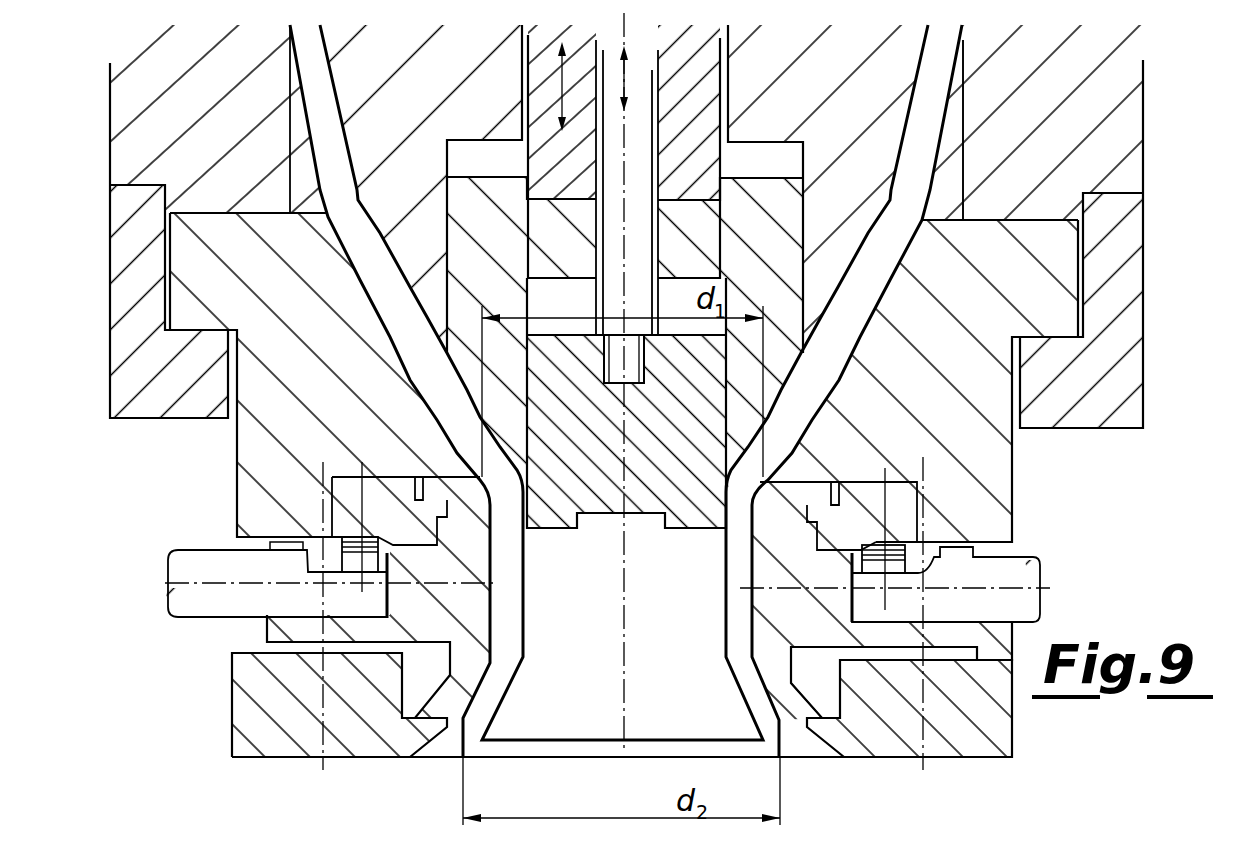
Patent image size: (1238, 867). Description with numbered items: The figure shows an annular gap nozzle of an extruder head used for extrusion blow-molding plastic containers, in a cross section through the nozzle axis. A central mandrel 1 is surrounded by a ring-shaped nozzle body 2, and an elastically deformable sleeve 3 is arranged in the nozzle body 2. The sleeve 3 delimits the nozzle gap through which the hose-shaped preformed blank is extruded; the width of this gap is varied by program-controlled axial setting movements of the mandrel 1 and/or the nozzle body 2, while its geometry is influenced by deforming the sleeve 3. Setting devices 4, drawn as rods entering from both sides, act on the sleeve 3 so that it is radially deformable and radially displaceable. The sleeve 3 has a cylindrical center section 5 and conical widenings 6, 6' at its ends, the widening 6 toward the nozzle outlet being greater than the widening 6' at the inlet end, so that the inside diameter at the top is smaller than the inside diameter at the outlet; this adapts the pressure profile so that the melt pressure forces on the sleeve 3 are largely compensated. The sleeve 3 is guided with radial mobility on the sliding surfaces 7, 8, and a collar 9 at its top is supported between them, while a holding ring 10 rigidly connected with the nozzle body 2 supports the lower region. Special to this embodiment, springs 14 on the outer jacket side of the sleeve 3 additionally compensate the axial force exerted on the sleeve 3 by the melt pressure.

The mandrel 1 is at (578, 722).
The nozzle body 2 is at (282, 444).
The sleeve 3 is at (768, 649).
The setting devices 4 is at (1013, 580).
The cylindrical center section 5 is at (770, 540).
The conical widening 6 is at (861, 740).
The conical widening 6' is at (984, 489).
The sliding surface 7 is at (775, 420).
The sliding surface 8 is at (800, 722).
The collar 9 is at (230, 330).
The holding ring 10 is at (232, 712).
The springs 14 is at (792, 548).